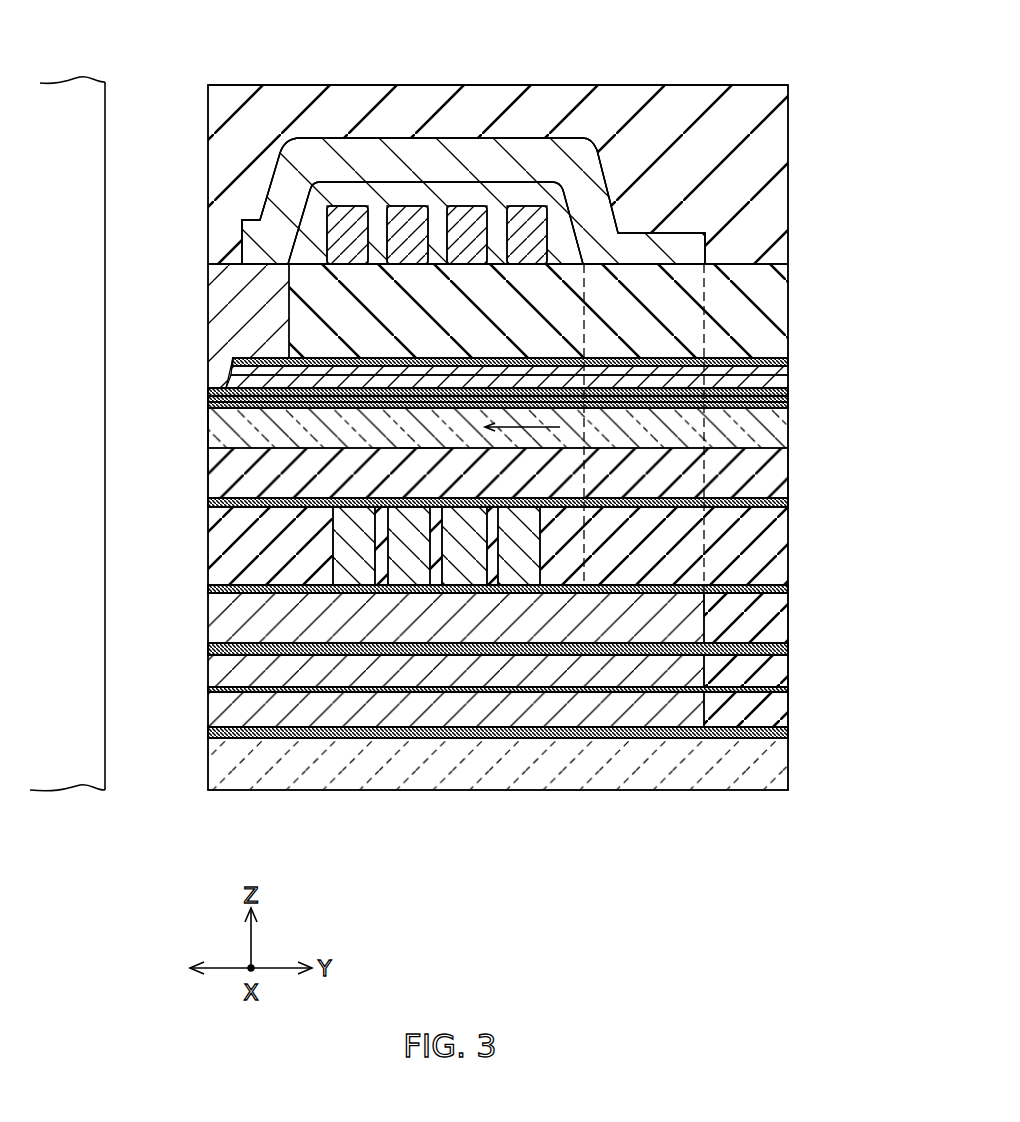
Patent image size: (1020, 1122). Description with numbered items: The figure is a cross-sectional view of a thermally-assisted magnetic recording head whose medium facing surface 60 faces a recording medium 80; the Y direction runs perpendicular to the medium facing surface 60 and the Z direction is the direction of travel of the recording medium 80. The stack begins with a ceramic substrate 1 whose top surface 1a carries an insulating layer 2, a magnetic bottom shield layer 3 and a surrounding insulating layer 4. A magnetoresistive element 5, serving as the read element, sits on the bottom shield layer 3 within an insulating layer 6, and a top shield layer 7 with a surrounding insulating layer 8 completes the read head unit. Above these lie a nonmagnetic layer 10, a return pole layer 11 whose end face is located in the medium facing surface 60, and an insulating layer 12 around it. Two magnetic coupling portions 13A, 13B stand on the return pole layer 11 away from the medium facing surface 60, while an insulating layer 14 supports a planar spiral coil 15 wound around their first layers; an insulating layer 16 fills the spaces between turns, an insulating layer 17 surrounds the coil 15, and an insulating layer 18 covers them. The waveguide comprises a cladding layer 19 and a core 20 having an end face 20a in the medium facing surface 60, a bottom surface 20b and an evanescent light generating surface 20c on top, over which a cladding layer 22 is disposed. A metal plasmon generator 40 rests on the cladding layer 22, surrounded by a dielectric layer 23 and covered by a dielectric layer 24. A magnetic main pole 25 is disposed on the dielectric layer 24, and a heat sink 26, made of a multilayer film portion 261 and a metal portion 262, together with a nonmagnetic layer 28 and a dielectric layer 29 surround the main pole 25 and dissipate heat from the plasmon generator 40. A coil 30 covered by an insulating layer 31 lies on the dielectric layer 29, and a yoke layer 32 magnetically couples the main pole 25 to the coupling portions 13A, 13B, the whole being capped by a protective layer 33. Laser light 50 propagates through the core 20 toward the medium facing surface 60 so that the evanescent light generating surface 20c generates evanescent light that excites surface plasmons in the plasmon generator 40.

The substrate 1 is at (236, 784).
The top surface 1a is at (208, 722).
The insulating layer 2 is at (788, 730).
The bottom shield layer 3 is at (208, 690).
The insulating layer 4 is at (788, 711).
The magnetoresistive element 5 is at (208, 673).
The insulating layer 6 is at (788, 686).
The top shield layer 7 is at (208, 650).
The insulating layer 8 is at (788, 666).
The nonmagnetic layer 10 is at (788, 647).
The return pole layer 11 is at (208, 616).
The insulating layer 12 is at (788, 618).
The coupling portion 13A is at (741, 424).
The coupling portion 13B is at (710, 518).
The insulating layer 14 is at (788, 590).
The coil 15 is at (333, 550).
The insulating layer 16 is at (788, 578).
The insulating layer 17 is at (500, 558).
The insulating layer 18 is at (788, 503).
The cladding layer 19 is at (788, 476).
The core 20 is at (681, 420).
The end face 20a is at (208, 418).
The bottom surface 20b is at (418, 455).
The evanescent light generating surface 20c is at (655, 403).
The cladding layer 22 is at (788, 406).
The dielectric layer 23 is at (788, 400).
The dielectric layer 24 is at (788, 391).
The main pole 25 is at (208, 295).
The heat sink 26 is at (150, 330).
The multilayer film portion 261 is at (227, 382).
The metal portion 262 is at (229, 370).
The nonmagnetic layer 28 is at (788, 362).
The dielectric layer 29 is at (788, 321).
The coil 30 is at (347, 207).
The insulating layer 31 is at (402, 188).
The yoke layer 32 is at (440, 138).
The protective layer 33 is at (500, 86).
The plasmon generator 40 is at (208, 392).
The laser light 50 is at (522, 392).
The medium facing surface 60 is at (204, 122).
The recording medium 80 is at (65, 92).